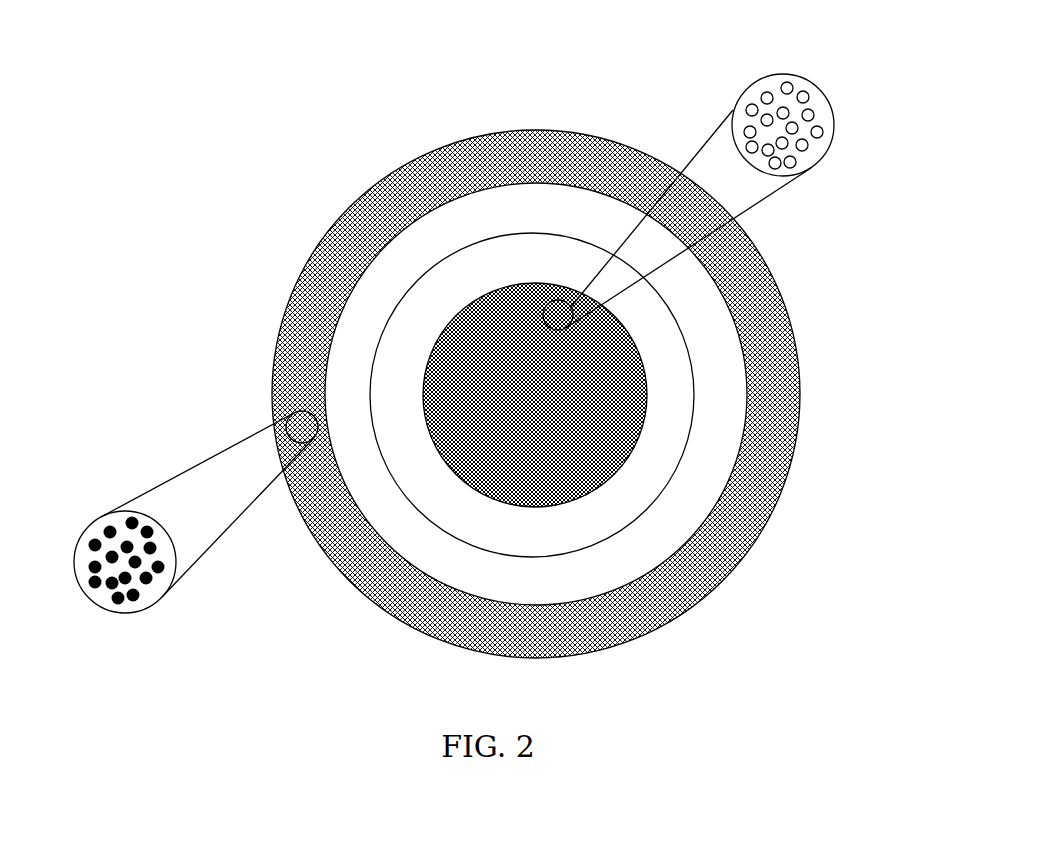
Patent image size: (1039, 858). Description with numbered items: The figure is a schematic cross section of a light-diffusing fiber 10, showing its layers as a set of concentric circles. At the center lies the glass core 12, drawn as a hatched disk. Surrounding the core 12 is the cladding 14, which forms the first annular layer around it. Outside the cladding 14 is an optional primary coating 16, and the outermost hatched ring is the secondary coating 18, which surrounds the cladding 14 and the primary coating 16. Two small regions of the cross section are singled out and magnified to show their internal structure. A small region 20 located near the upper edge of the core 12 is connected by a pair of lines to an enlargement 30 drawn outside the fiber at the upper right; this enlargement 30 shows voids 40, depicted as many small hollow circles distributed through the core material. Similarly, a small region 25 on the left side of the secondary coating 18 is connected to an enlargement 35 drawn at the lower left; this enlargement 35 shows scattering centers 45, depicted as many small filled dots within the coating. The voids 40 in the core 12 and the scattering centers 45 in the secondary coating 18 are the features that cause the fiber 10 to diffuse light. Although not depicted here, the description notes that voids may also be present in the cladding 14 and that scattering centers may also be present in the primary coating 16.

The light-diffusing fiber 10 is at (273, 142).
The core 12 is at (608, 372).
The cladding 14 is at (663, 458).
The primary coating 16 is at (690, 515).
The secondary coating 18 is at (683, 597).
The region of core 20 is at (553, 310).
The region of secondary coating 25 is at (297, 418).
The enlargement of core region 30 is at (747, 83).
The enlargement of secondary coating region 35 is at (93, 521).
The voids 40 is at (803, 150).
The scattering centers 45 is at (148, 580).